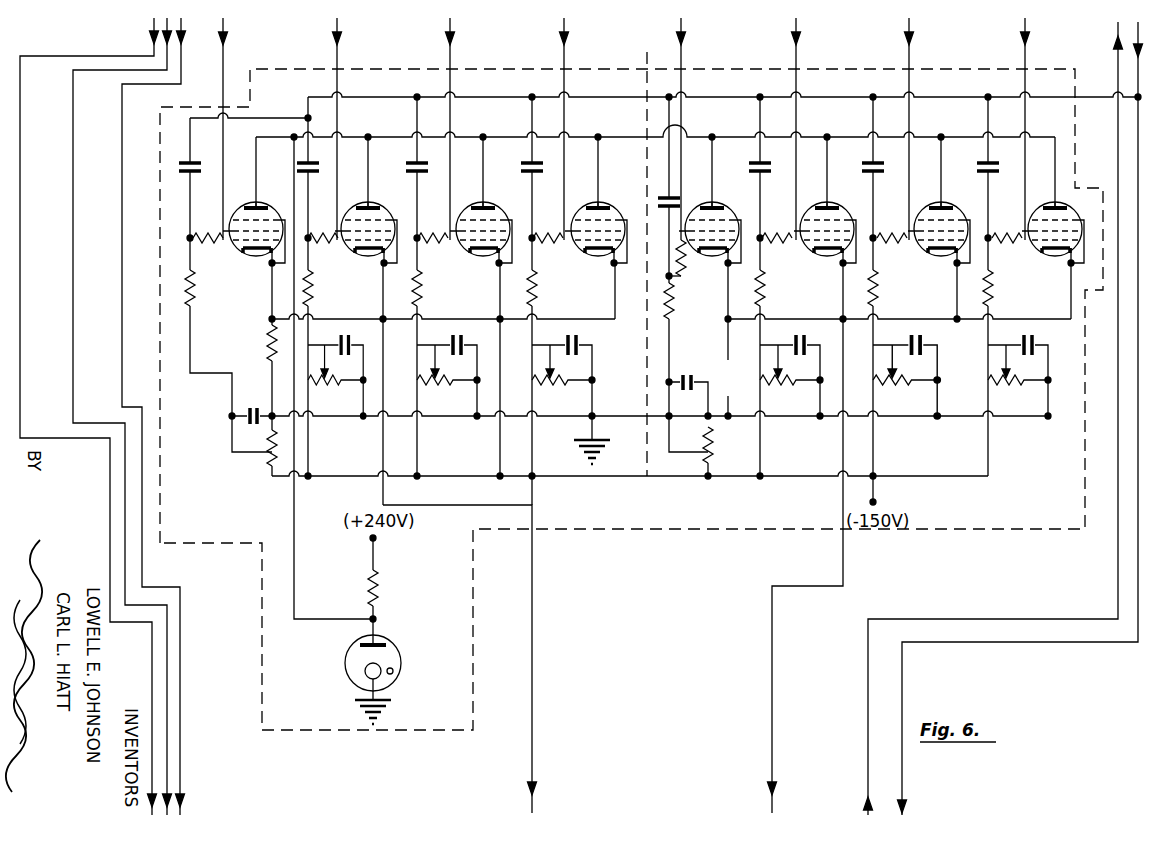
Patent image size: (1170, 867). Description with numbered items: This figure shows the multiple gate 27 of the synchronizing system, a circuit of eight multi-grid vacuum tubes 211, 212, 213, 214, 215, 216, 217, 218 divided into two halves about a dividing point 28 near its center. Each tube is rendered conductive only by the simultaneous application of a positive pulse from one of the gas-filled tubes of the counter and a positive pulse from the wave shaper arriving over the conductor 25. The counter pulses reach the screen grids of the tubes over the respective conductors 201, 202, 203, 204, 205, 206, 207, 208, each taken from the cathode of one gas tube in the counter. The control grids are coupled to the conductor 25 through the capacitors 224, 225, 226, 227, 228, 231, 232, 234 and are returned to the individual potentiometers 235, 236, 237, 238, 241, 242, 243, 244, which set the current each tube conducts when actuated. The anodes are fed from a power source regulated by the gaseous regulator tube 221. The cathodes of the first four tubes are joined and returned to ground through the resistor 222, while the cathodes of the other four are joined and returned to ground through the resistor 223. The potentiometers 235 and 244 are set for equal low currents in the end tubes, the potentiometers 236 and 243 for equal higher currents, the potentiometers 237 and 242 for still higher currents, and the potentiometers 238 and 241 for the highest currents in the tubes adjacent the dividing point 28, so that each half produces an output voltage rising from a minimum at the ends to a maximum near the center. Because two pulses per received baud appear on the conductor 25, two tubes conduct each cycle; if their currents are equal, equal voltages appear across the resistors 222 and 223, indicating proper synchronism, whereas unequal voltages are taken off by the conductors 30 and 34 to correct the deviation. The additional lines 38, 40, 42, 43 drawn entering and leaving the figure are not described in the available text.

The conductor 201 is at (226, 66).
The conductor 202 is at (340, 66).
The conductor 203 is at (453, 66).
The conductor 204 is at (567, 66).
The conductor 205 is at (684, 66).
The conductor 206 is at (799, 66).
The conductor 207 is at (912, 66).
The conductor 208 is at (1028, 66).
The multi-grid vacuum tube 211 is at (234, 258).
The multi-grid vacuum tube 212 is at (348, 258).
The multi-grid vacuum tube 213 is at (462, 258).
The multi-grid vacuum tube 214 is at (580, 258).
The multi-grid vacuum tube 215 is at (726, 206).
The multi-grid vacuum tube 216 is at (810, 258).
The multi-grid vacuum tube 217 is at (922, 258).
The multi-grid vacuum tube 218 is at (1040, 258).
The gaseous regulator tube 221 is at (401, 661).
The resistor 222 is at (268, 345).
The resistor 223 is at (689, 317).
The capacitor 224 is at (199, 163).
The capacitor 225 is at (313, 172).
The capacitor 226 is at (410, 170).
The capacitor 227 is at (526, 170).
The capacitor 228 is at (662, 203).
The capacitor 231 is at (757, 167).
The capacitor 232 is at (869, 167).
The capacitor 234 is at (983, 167).
The potentiometer 235 is at (270, 467).
The potentiometer 236 is at (356, 386).
The potentiometer 237 is at (464, 386).
The potentiometer 238 is at (581, 386).
The potentiometer 241 is at (710, 461).
The potentiometer 242 is at (806, 386).
The potentiometer 243 is at (922, 386).
The potentiometer 244 is at (1041, 386).
The conductor 25 is at (1140, 106).
The multiple gate 27 is at (984, 531).
The dividing point 28 is at (652, 478).
The conductor 30 is at (534, 632).
The conductor 34 is at (771, 634).
The line 38 is at (1117, 85).
The line 40 is at (74, 176).
The line 42 is at (122, 138).
The line 43 is at (152, 35).